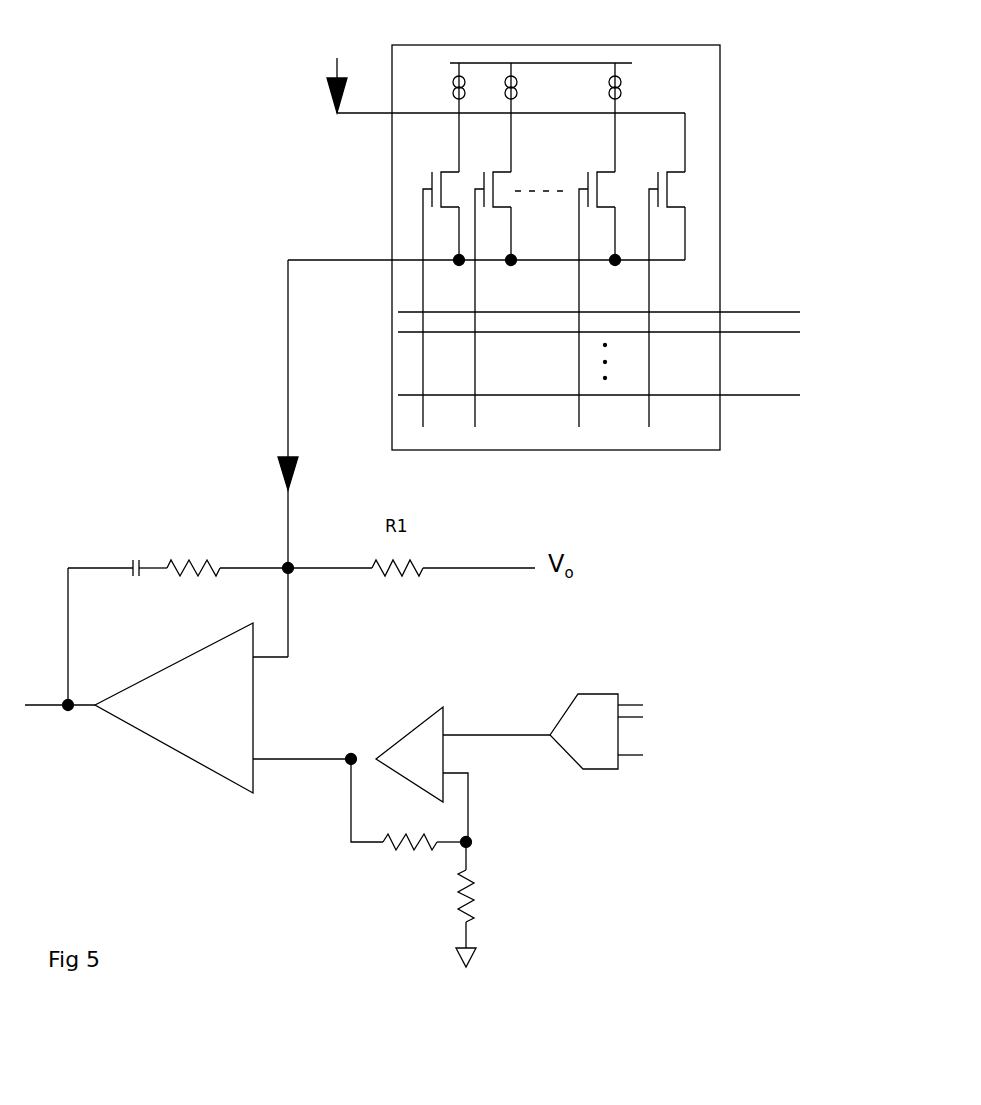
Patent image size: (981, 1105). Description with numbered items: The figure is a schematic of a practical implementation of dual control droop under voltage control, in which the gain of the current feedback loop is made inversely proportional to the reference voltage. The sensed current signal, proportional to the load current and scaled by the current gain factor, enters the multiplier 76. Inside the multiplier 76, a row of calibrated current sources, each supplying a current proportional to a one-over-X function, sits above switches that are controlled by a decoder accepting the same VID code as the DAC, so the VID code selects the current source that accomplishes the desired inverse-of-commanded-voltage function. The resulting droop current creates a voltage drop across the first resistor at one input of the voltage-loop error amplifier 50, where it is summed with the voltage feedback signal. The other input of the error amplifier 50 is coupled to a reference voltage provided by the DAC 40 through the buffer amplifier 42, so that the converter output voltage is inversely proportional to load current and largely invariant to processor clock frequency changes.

The multiplier 76 is at (528, 235).
The voltage-loop error amplifier 50 is at (210, 727).
The buffer amplifier 42 is at (448, 803).
The DAC 40 is at (619, 774).